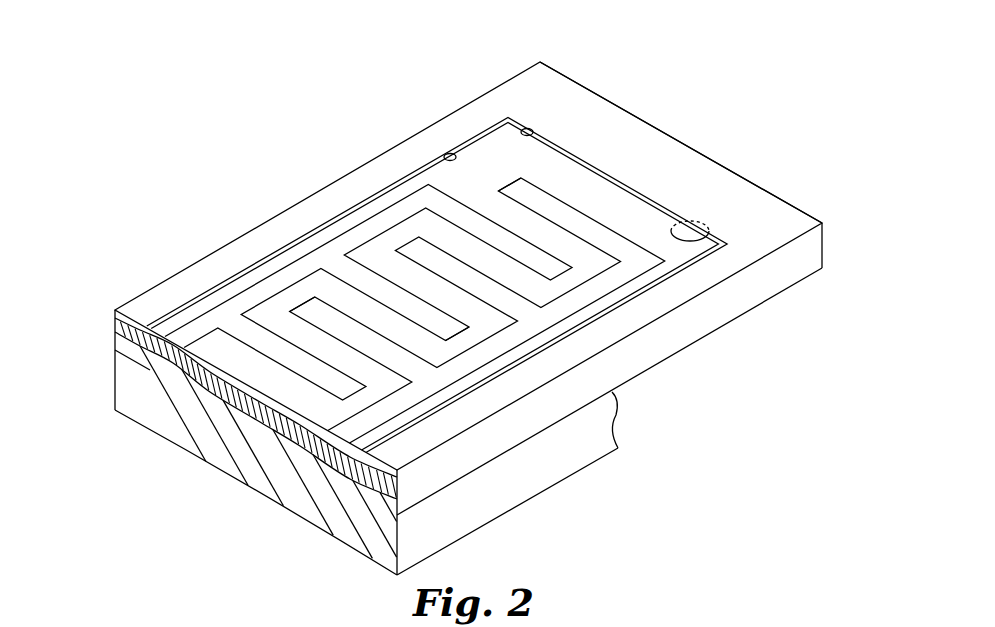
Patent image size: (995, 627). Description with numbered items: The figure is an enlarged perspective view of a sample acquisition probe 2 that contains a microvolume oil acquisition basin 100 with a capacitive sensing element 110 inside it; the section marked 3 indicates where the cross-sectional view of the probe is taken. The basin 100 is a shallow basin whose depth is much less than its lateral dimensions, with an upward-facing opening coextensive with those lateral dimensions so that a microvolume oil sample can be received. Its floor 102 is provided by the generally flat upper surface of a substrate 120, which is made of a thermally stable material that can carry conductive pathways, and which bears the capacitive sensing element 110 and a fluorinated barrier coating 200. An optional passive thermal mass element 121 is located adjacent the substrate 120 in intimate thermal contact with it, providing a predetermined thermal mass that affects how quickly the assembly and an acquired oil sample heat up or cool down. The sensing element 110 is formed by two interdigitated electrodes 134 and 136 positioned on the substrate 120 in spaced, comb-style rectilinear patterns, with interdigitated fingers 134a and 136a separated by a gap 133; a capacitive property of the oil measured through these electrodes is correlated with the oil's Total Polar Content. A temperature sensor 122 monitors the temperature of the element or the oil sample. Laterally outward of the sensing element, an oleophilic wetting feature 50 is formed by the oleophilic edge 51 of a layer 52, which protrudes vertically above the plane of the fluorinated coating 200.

The sample acquisition probe 2 is at (319, 70).
The section line for FIG. 3 is at (310, 187).
The oleophilic wetting feature 50 is at (450, 154).
The oleophilic edge 51 is at (526, 129).
The layer 52 is at (687, 165).
The microvolume oil acquisition basin 100 is at (618, 200).
The floor 102 is at (579, 183).
The capacitive sensing element 110 is at (517, 190).
The substrate 120 is at (298, 442).
The passive thermal mass element 121 is at (235, 462).
The temperature sensor 122 is at (690, 228).
The gap 133 is at (435, 235).
The interdigitated electrode 134 is at (482, 356).
The interdigitated finger 134a is at (405, 355).
The interdigitated electrode 136 is at (365, 235).
The interdigitated finger 136a is at (345, 268).
The fluorinated barrier coating 200 is at (175, 338).